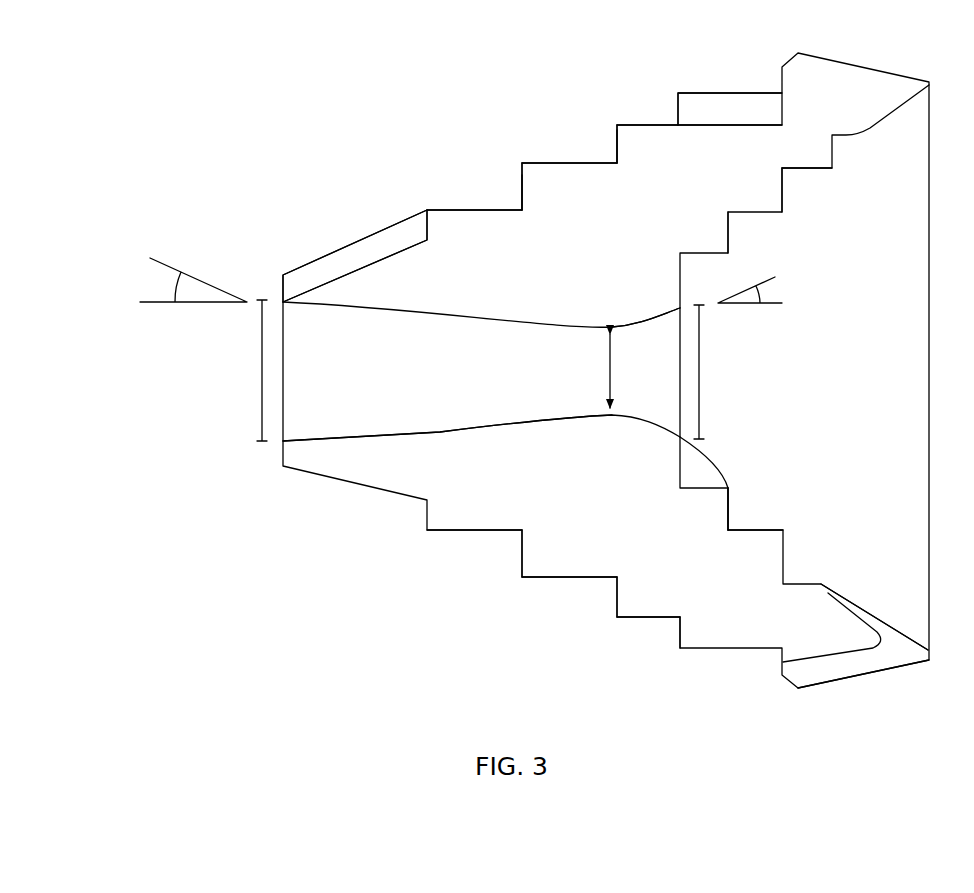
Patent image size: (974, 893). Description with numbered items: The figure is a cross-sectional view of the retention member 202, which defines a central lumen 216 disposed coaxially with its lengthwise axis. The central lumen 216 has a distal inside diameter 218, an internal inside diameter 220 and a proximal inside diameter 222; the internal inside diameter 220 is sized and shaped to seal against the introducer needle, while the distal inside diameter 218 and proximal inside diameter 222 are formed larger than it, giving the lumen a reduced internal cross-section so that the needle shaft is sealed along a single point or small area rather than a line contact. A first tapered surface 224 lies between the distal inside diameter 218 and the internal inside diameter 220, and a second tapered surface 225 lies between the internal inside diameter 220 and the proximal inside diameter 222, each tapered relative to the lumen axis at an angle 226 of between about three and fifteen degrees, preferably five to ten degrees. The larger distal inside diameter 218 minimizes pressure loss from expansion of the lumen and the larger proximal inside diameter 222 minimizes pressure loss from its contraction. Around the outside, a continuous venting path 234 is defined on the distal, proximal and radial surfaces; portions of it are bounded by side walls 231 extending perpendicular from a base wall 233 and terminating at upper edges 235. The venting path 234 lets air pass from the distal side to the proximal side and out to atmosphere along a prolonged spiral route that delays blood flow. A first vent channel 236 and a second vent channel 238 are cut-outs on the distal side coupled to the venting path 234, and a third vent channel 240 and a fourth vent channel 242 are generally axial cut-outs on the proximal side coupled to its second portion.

The retention member 202 is at (730, 628).
The central lumen 216 is at (395, 375).
The distal inside diameter 218 is at (262, 403).
The internal inside diameter 220 is at (605, 376).
The proximal inside diameter 222 is at (703, 384).
The first tapered surface 224 is at (325, 428).
The second tapered surface 225 is at (650, 325).
The angle 226 is at (178, 288).
The side walls 231 is at (519, 162).
The base wall 233 is at (663, 125).
The venting path 234 is at (648, 650).
The upper edges 235 is at (425, 208).
The first vent channel 236 is at (312, 262).
The second vent channel 238 is at (756, 97).
The third vent channel 240 is at (858, 662).
The fourth vent channel 242 is at (702, 468).